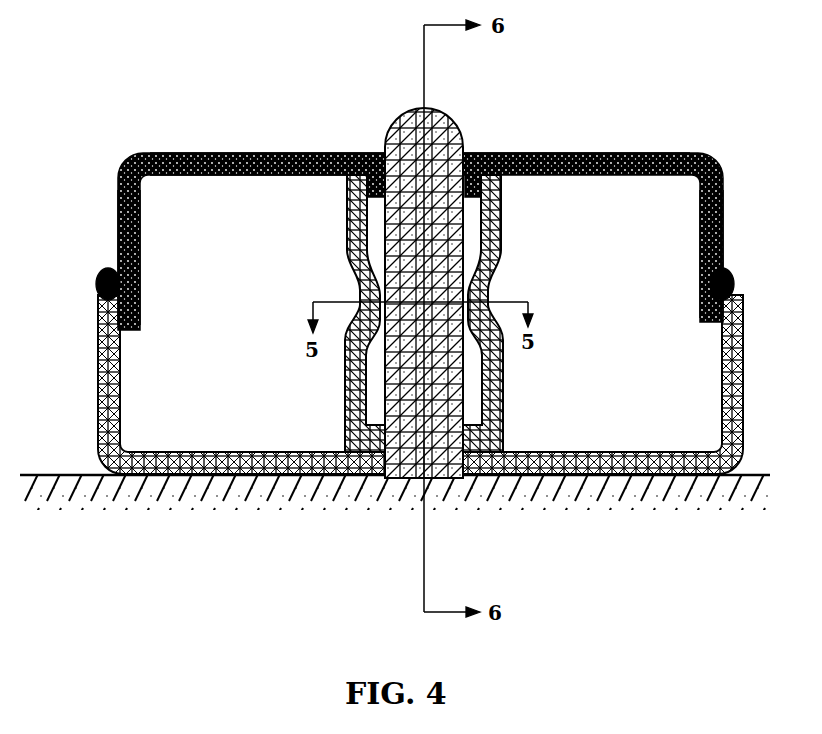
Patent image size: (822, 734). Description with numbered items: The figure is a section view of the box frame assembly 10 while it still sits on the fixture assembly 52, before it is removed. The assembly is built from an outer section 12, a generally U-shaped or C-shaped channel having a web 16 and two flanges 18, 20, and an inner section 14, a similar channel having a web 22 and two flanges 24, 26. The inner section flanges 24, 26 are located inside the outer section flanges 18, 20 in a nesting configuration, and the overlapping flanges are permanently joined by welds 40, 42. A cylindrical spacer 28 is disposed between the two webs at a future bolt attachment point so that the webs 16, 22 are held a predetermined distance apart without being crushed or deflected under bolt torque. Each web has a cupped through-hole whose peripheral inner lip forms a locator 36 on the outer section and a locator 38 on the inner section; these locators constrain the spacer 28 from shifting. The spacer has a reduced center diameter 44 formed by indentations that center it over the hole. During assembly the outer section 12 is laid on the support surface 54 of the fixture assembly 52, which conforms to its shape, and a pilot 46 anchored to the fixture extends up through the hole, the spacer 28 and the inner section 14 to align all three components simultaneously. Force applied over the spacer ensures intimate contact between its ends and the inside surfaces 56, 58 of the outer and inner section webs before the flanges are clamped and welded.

The box frame assembly 10 is at (137, 116).
The outer section 12 is at (540, 476).
The inner section 14 is at (636, 152).
The web 16 is at (207, 478).
The flange 18 is at (122, 372).
The flange 20 is at (720, 390).
The web 22 is at (282, 151).
The flange 24 is at (141, 235).
The flange 26 is at (698, 228).
The cylindrical spacer 28 is at (508, 245).
The locator 36 is at (390, 478).
The locator 38 is at (462, 137).
The weld 40 is at (100, 274).
The weld 42 is at (731, 272).
The reduced center diameter 44 is at (492, 280).
The pilot 46 is at (437, 470).
The fixture assembly 52 is at (407, 500).
The support surface 54 is at (73, 480).
The inside surface 56 is at (232, 452).
The inside surface 58 is at (250, 178).